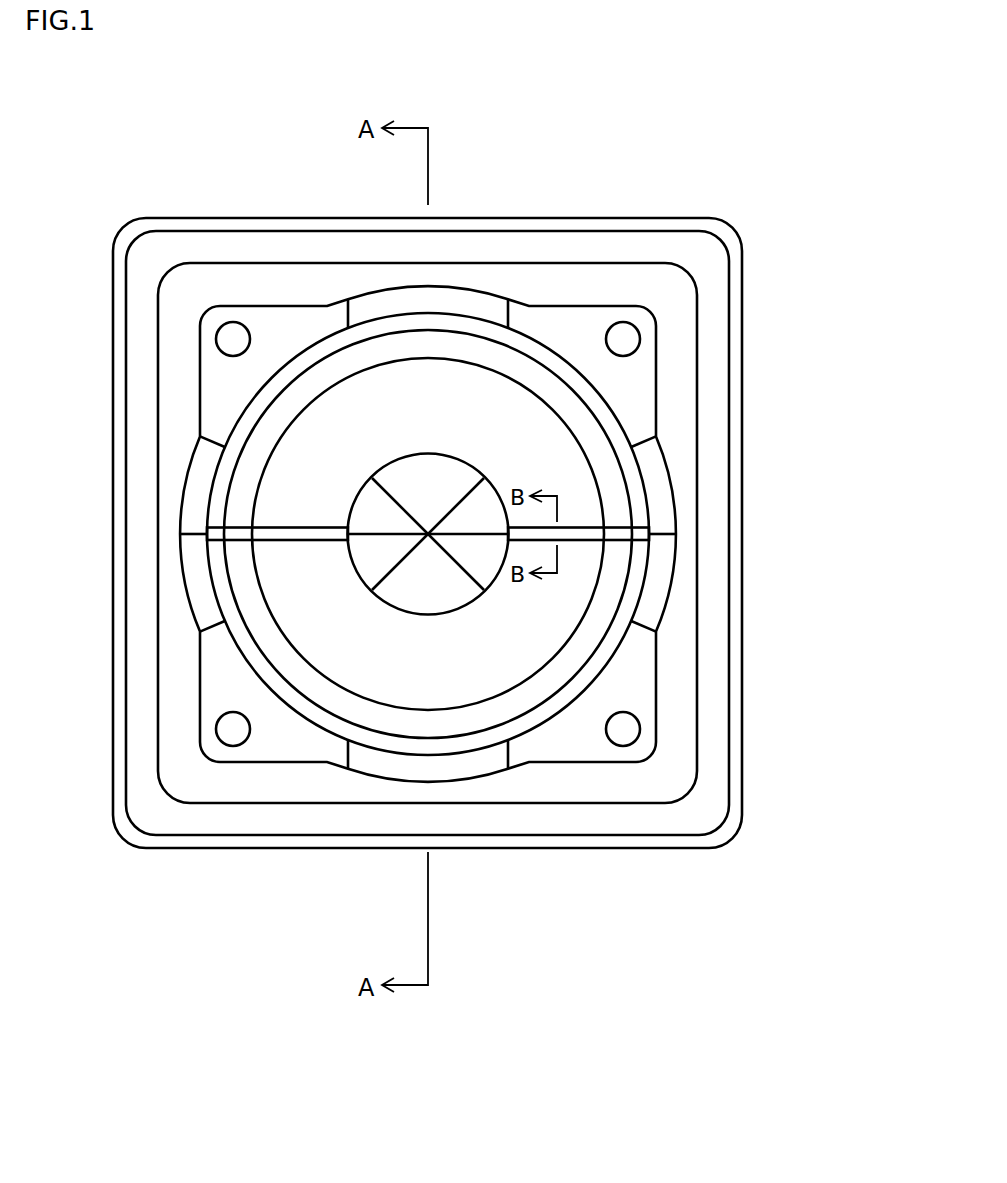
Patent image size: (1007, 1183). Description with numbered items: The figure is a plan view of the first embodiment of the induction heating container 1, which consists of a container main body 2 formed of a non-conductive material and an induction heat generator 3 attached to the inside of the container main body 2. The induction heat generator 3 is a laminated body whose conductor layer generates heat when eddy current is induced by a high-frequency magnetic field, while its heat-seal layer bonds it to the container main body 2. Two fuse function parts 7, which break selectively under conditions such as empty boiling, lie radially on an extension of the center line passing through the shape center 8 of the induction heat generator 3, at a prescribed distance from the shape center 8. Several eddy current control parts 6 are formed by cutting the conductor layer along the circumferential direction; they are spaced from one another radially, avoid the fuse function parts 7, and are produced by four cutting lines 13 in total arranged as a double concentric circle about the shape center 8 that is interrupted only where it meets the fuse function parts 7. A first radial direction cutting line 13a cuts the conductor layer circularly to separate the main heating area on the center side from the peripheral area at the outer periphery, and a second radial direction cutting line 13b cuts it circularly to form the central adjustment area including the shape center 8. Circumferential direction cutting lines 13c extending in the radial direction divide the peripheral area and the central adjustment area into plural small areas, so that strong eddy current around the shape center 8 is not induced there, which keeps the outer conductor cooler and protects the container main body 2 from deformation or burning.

The induction heating container 1 is at (238, 184).
The container main body 2 is at (185, 300).
The induction heat generator 3 is at (290, 486).
The eddy current control part 6 is at (532, 343).
The fuse function part 7 is at (235, 524).
The shape center 8 is at (428, 534).
The cutting line 13 is at (587, 457).
The first radial direction cutting line 13a is at (297, 713).
The second radial direction cutting line 13b is at (455, 614).
The circumferential direction cutting line 13c is at (352, 757).